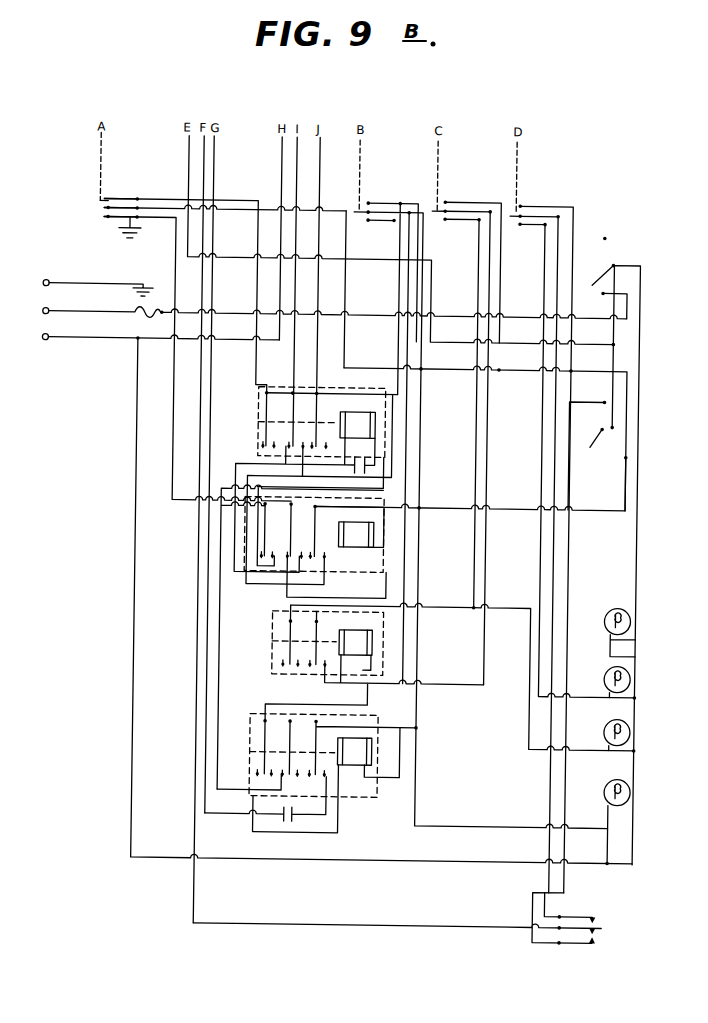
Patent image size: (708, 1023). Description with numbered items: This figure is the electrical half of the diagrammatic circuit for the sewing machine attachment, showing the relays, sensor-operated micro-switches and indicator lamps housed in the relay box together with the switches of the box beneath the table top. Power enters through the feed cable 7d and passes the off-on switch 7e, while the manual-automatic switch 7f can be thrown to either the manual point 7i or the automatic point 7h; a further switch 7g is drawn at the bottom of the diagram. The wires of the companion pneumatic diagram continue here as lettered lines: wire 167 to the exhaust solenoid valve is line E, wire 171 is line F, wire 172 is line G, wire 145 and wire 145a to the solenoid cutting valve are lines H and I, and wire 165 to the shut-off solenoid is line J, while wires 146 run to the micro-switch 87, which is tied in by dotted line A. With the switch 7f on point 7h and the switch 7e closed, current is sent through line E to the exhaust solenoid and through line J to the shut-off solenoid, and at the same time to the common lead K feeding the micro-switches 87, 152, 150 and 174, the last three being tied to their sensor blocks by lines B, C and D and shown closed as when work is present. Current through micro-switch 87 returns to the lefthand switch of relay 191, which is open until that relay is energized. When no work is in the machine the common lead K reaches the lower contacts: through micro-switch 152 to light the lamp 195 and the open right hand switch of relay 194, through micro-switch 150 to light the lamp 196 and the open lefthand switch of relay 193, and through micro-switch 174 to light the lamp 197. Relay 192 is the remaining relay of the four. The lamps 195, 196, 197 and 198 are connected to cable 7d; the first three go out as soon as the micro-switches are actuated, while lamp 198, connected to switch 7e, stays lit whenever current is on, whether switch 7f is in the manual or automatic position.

The micro-switch 87 is at (122, 200).
The wires 146 is at (147, 200).
The wire 167 is at (184, 165).
The wire 171 is at (199, 183).
The wire 172 is at (211, 180).
The wire 145a is at (292, 163).
The wire 145 is at (277, 183).
The wire 165 is at (315, 171).
The micro-switch 152 is at (374, 203).
The micro-switch 150 is at (458, 201).
The micro-switch 174 is at (538, 204).
The off-on switch 7e is at (614, 261).
The feed cable 7d is at (90, 318).
The common lead K is at (348, 287).
The relay 191 is at (367, 426).
The relay 192 is at (367, 541).
The relay 193 is at (362, 649).
The relay 194 is at (359, 759).
The manual position contact 7i is at (603, 399).
The manual-automatic switch 7f is at (601, 426).
The automatic position contact 7h is at (600, 454).
The lamp 198 is at (605, 623).
The lamp 197 is at (605, 681).
The lamp 196 is at (606, 734).
The lamp 195 is at (607, 794).
The switch 7g is at (585, 910).